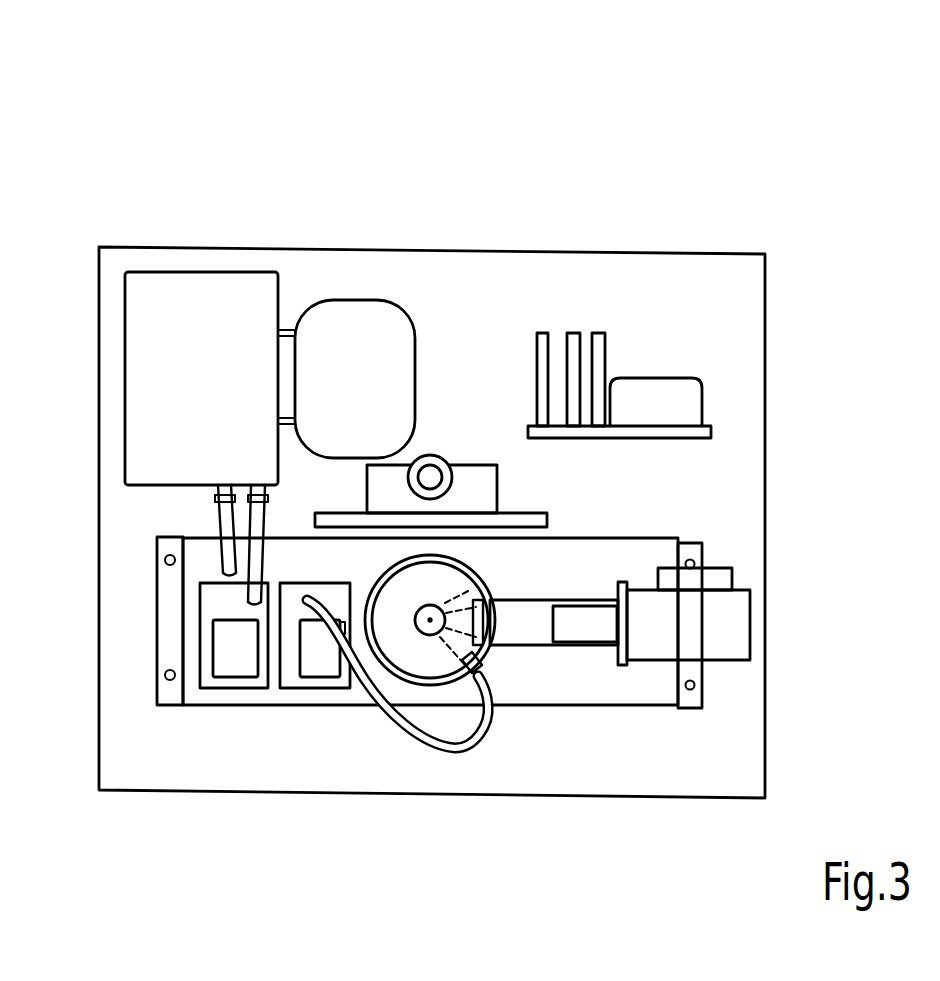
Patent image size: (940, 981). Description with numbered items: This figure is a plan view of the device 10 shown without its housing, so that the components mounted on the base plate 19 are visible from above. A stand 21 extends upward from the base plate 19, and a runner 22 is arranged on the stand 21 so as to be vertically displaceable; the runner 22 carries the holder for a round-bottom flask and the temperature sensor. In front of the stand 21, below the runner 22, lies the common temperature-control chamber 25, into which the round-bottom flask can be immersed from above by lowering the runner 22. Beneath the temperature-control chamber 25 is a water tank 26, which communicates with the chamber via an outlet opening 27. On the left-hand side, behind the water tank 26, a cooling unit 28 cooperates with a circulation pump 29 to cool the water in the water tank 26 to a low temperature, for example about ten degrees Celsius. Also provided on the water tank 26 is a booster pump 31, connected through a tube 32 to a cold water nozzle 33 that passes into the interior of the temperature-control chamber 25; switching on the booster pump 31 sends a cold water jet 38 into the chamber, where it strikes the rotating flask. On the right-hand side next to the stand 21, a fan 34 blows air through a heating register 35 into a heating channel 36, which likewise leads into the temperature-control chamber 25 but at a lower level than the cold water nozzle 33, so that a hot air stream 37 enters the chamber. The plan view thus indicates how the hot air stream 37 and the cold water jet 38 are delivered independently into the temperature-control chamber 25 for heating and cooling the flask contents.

The device 10 is at (481, 111).
The base plate 19 is at (740, 310).
The stand 21 is at (470, 480).
The runner 22 is at (522, 523).
The temperature-control chamber 25 is at (468, 586).
The water tank 26 is at (650, 560).
The outlet opening 27 is at (427, 633).
The cooling unit 28 is at (160, 298).
The circulation pump 29 is at (240, 667).
The booster pump 31 is at (322, 665).
The tube 32 is at (473, 737).
The cold water nozzle 33 is at (483, 660).
The fan 34 is at (732, 628).
The heating register 35 is at (602, 628).
The heating channel 36 is at (537, 630).
The hot air stream 37 is at (478, 602).
The cold water jet 38 is at (443, 657).